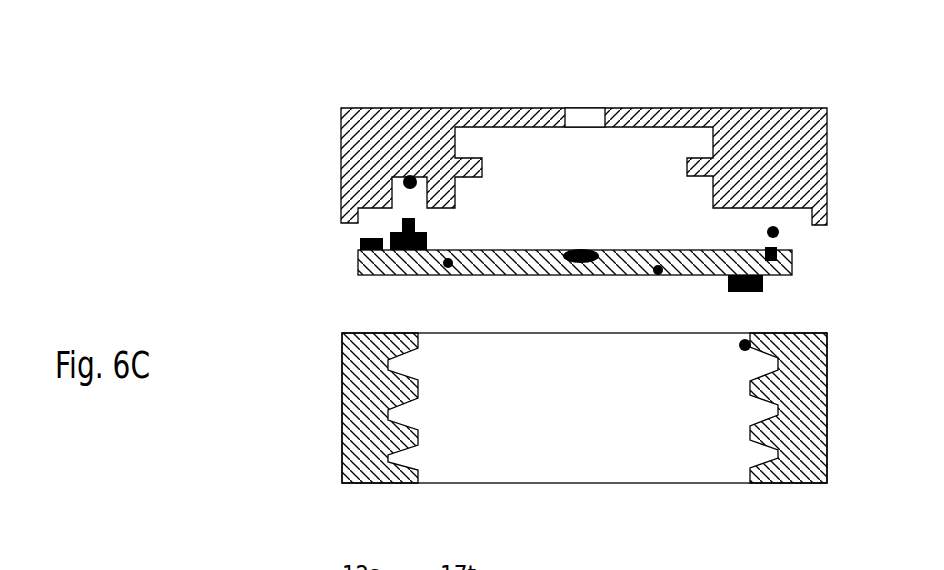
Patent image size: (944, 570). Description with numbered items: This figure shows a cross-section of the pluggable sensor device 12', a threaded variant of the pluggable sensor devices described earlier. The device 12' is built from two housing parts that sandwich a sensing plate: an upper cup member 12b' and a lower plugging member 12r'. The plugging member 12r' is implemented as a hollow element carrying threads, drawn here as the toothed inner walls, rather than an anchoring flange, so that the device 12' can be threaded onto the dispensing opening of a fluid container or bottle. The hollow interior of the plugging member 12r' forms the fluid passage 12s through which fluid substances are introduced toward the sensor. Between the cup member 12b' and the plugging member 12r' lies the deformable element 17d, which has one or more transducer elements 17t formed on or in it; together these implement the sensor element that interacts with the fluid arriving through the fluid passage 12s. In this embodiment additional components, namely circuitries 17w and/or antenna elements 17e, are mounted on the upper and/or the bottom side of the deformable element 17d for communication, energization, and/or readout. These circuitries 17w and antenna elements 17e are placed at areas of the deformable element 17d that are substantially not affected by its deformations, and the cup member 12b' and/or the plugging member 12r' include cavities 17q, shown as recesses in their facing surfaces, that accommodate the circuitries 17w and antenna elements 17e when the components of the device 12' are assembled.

The pluggable sensor device 12' is at (156, 154).
The cup member 12b' is at (542, 154).
The plugging member 12r' is at (535, 421).
The fluid passage 12s is at (687, 455).
The cavities 17q is at (745, 345).
The circuitries 17w is at (390, 230).
The antenna elements 17e is at (367, 245).
The deformable element 17d is at (448, 264).
The transducer elements 17t is at (513, 276).